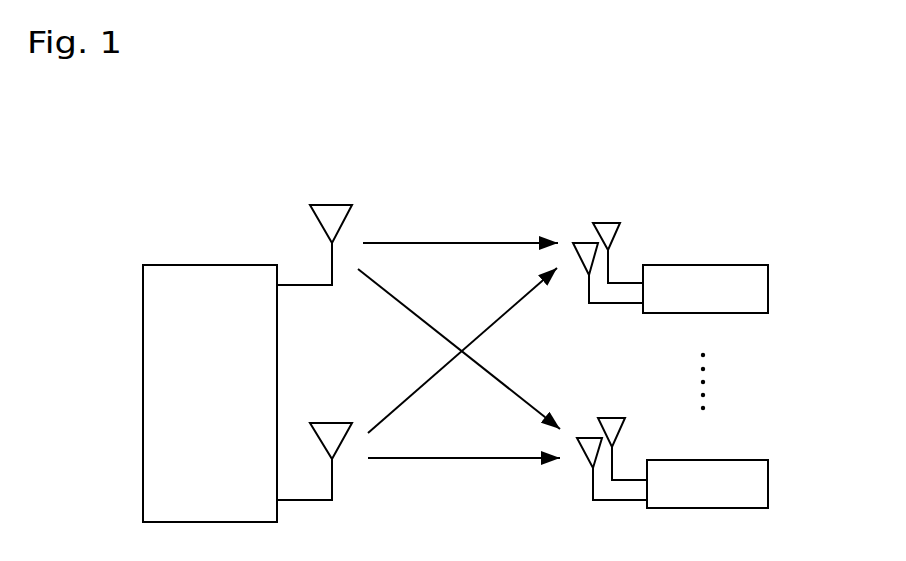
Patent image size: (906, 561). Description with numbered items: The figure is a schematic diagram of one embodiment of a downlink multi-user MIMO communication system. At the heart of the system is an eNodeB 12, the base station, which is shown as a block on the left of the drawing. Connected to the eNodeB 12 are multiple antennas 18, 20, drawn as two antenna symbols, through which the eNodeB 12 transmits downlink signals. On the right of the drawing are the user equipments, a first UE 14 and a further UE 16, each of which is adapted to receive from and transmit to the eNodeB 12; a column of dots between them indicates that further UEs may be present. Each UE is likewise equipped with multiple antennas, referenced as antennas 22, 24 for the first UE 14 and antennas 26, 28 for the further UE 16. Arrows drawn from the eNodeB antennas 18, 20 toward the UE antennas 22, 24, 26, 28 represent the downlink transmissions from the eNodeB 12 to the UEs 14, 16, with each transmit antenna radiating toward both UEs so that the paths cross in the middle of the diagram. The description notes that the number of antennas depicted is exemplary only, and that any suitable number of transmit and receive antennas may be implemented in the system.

The eNodeB 12 is at (182, 265).
The UE 14 is at (705, 265).
The UE 16 is at (707, 460).
The antenna 18 is at (347, 204).
The antenna 20 is at (347, 422).
The antenna 22 is at (580, 242).
The antenna 24 is at (613, 223).
The antenna 26 is at (582, 437).
The antenna 28 is at (613, 417).